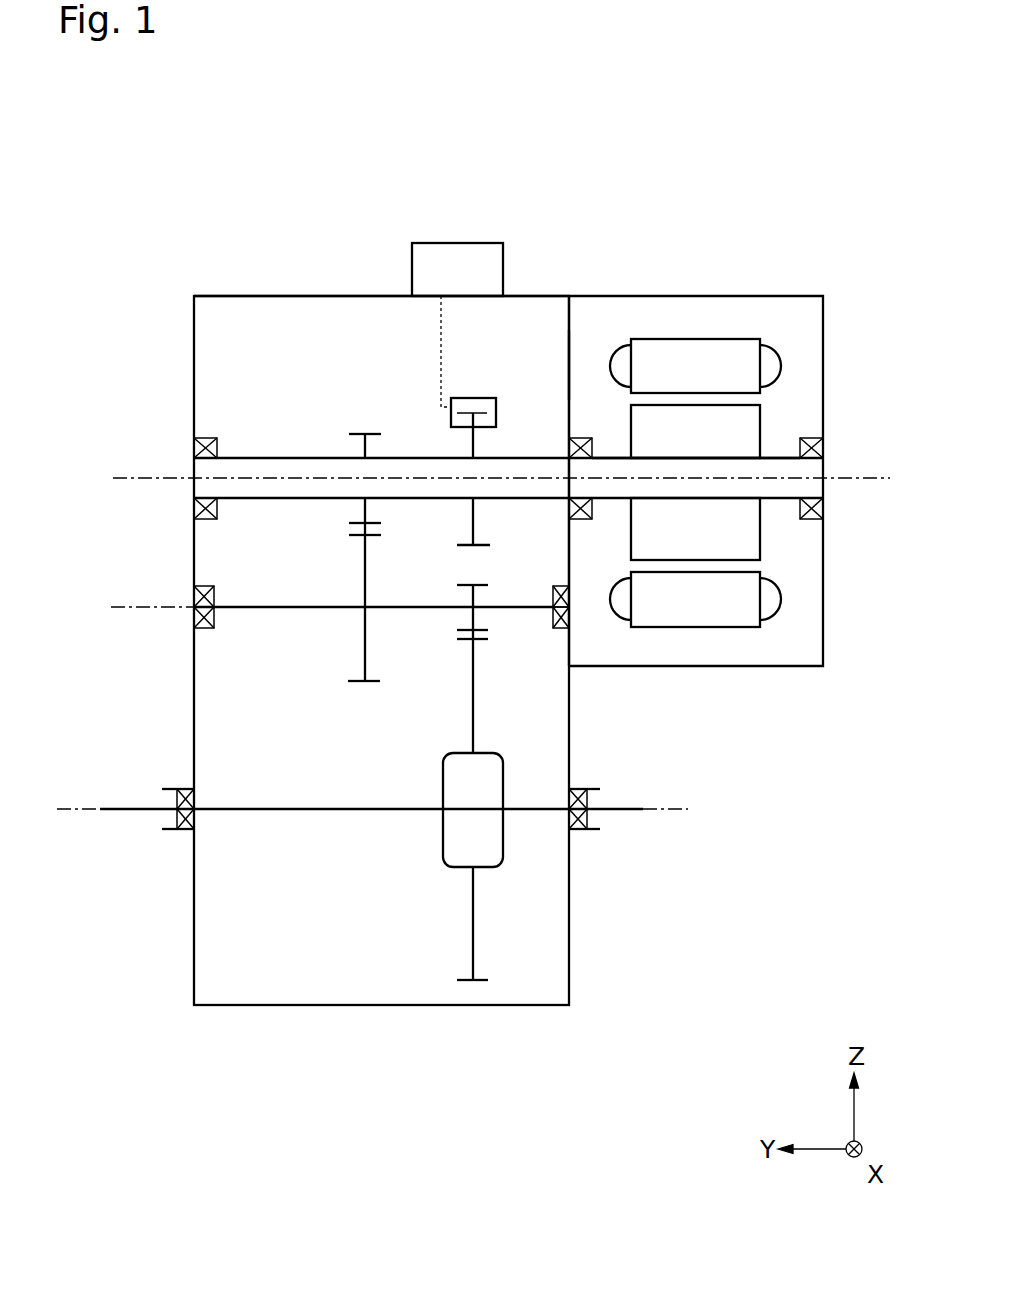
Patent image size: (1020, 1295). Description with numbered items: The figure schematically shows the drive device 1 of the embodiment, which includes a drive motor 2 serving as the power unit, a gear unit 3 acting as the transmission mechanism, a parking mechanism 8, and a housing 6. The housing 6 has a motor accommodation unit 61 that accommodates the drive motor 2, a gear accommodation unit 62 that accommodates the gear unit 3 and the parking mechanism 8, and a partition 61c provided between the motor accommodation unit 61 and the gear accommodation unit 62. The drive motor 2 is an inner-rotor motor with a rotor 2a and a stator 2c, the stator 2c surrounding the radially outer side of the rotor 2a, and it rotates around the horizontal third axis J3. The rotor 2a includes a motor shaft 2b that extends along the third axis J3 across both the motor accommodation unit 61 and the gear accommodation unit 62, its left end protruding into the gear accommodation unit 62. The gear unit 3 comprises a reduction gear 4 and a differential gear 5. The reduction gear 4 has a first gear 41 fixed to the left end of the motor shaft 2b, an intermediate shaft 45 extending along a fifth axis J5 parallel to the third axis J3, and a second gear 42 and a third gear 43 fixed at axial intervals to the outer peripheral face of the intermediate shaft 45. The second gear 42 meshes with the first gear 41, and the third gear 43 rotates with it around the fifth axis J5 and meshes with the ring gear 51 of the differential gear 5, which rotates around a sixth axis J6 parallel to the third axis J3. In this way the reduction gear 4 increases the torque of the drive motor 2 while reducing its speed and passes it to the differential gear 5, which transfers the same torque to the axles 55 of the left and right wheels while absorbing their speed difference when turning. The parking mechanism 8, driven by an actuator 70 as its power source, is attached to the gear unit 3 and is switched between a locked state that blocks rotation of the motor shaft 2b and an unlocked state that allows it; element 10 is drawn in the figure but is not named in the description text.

The drive device 1 is at (802, 187).
The drive motor 2 is at (741, 545).
The rotor 2a is at (763, 532).
The motor shaft 2b is at (777, 458).
The stator 2c is at (787, 603).
The gear unit 3 is at (313, 357).
The reduction gear 4 is at (283, 402).
The differential gear 5 is at (522, 883).
The housing 6 is at (663, 411).
The parking mechanism 8 is at (427, 388).
The parking lock mechanism 10 is at (464, 400).
The first gear 41 is at (372, 430).
The second gear 42 is at (355, 683).
The third gear 43 is at (477, 613).
The intermediate shaft 45 is at (318, 605).
The ring gear 51 is at (473, 902).
The axles 55 is at (133, 812).
The motor accommodation unit 61 is at (762, 296).
The partition 61c is at (536, 302).
The gear accommodation unit 62 is at (540, 296).
The actuator 70 is at (458, 243).
The third axis J3 is at (855, 470).
The fifth axis J5 is at (160, 610).
The sixth axis J6 is at (78, 815).